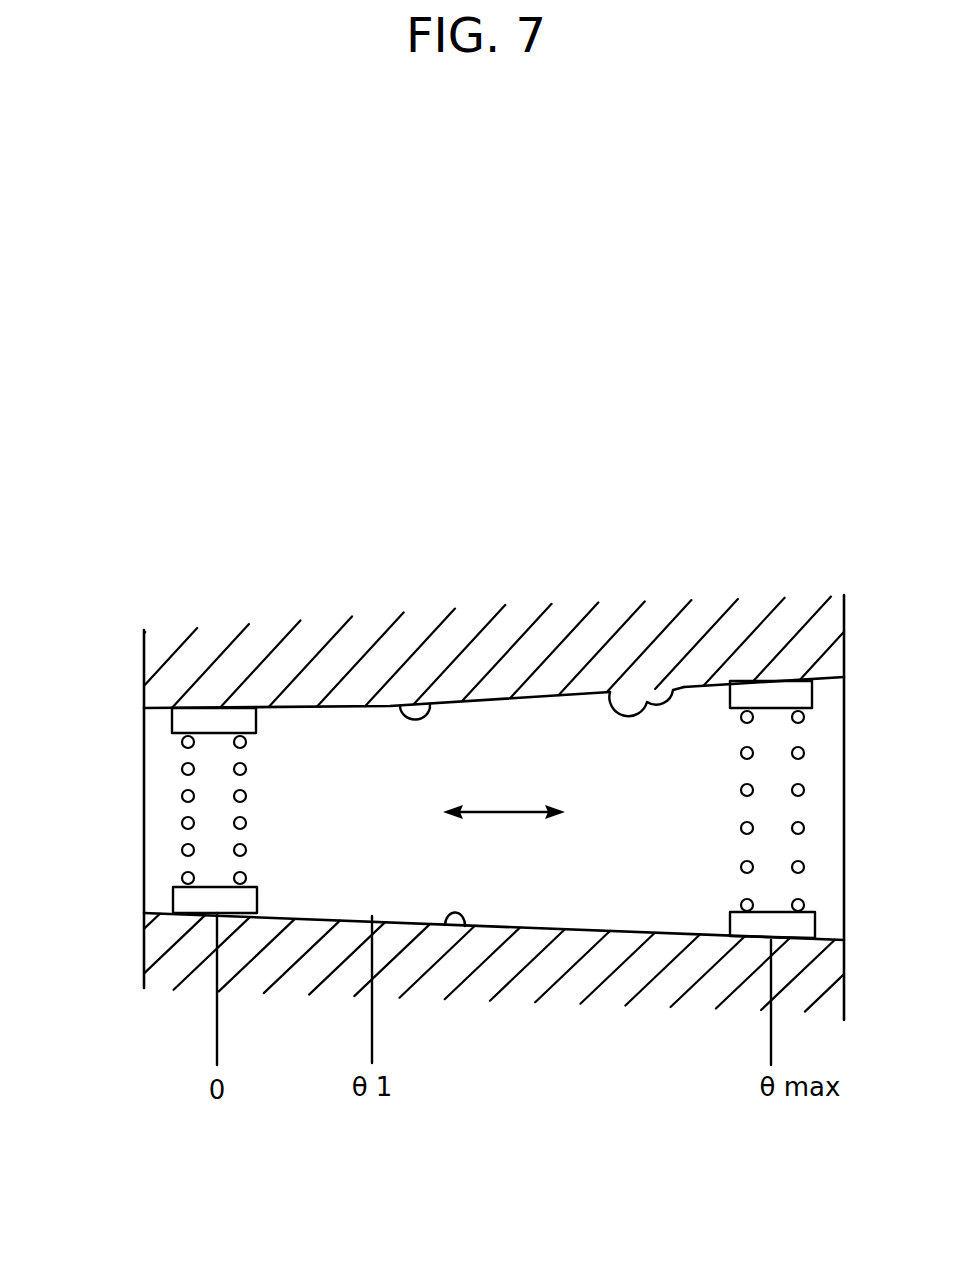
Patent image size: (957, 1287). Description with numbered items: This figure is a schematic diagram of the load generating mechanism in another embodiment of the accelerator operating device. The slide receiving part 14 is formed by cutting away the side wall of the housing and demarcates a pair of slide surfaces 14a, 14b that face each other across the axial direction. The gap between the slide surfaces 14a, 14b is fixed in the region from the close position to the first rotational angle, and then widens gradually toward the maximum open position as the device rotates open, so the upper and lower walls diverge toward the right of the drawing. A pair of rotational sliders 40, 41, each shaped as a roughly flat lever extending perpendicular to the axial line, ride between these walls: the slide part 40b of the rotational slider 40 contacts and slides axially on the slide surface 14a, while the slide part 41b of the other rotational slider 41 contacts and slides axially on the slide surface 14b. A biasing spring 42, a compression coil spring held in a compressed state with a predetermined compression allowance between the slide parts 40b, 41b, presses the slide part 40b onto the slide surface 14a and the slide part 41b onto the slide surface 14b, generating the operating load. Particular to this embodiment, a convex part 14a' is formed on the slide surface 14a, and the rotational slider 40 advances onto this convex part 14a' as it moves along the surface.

The slide receiving part 14 is at (494, 817).
The slide surface 14a is at (432, 597).
The convex part 14a' is at (627, 606).
The slide surface 14b is at (460, 926).
The rotational slider 40 is at (492, 603).
The slide part 40b is at (771, 695).
The rotational slider 41 is at (470, 1016).
The slide part 41b is at (193, 903).
The biasing spring 42 is at (182, 823).